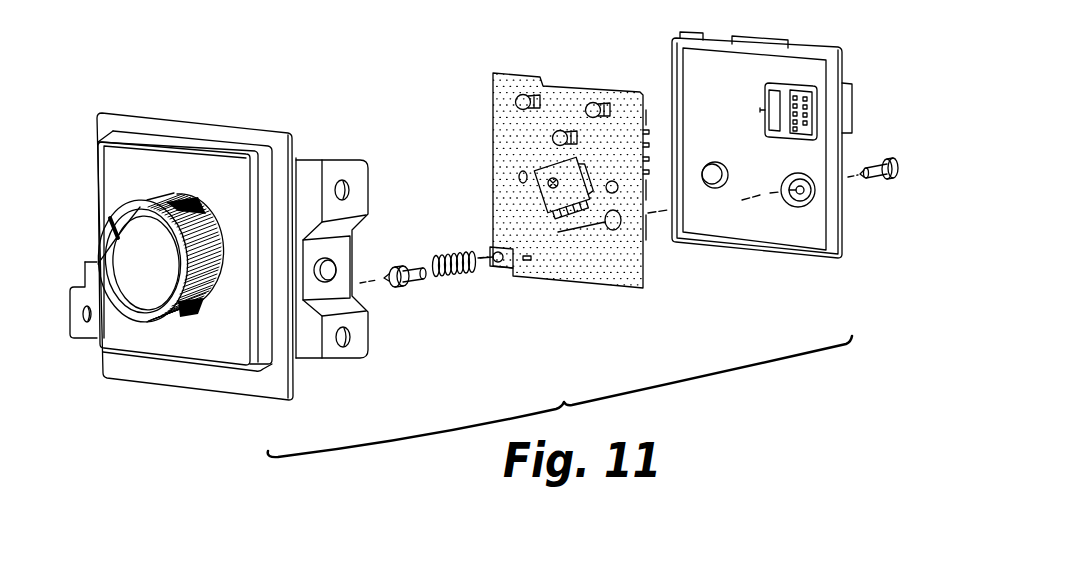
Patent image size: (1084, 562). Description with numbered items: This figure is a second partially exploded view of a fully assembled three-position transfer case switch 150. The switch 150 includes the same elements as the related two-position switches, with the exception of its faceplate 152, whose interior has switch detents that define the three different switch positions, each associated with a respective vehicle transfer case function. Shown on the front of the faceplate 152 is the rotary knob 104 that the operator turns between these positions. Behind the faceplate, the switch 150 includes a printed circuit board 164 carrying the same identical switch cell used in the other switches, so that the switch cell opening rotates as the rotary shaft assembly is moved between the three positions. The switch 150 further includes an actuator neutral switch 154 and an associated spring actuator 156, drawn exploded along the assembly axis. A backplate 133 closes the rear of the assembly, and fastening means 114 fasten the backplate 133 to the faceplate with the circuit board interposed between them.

The three-position transfer case switch 150 is at (283, 75).
The faceplate 152 is at (182, 388).
The rotary switch knob 104 is at (153, 285).
The actuator neutral switch 154 is at (407, 287).
The spring actuator 156 is at (457, 253).
The printed circuit board 164 is at (573, 86).
The backplate 133 is at (760, 253).
The fastening means 114 is at (882, 180).